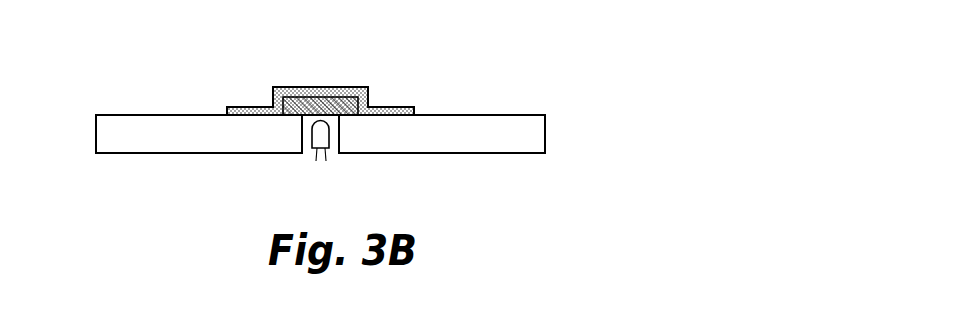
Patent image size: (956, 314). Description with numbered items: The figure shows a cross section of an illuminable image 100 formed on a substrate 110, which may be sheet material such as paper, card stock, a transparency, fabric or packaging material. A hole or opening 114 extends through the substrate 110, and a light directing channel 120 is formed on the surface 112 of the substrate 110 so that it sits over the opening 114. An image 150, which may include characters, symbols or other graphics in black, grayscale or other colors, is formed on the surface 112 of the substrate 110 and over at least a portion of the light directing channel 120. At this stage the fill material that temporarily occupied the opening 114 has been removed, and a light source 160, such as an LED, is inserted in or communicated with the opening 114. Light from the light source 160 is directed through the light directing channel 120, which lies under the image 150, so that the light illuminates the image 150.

The illuminable image 100 is at (543, 53).
The substrate 110 is at (537, 133).
The surface 112 is at (182, 114).
The hole or opening 114 is at (304, 141).
The light directing channel 120 is at (322, 107).
The image 150 is at (343, 92).
The light source 160 is at (335, 160).